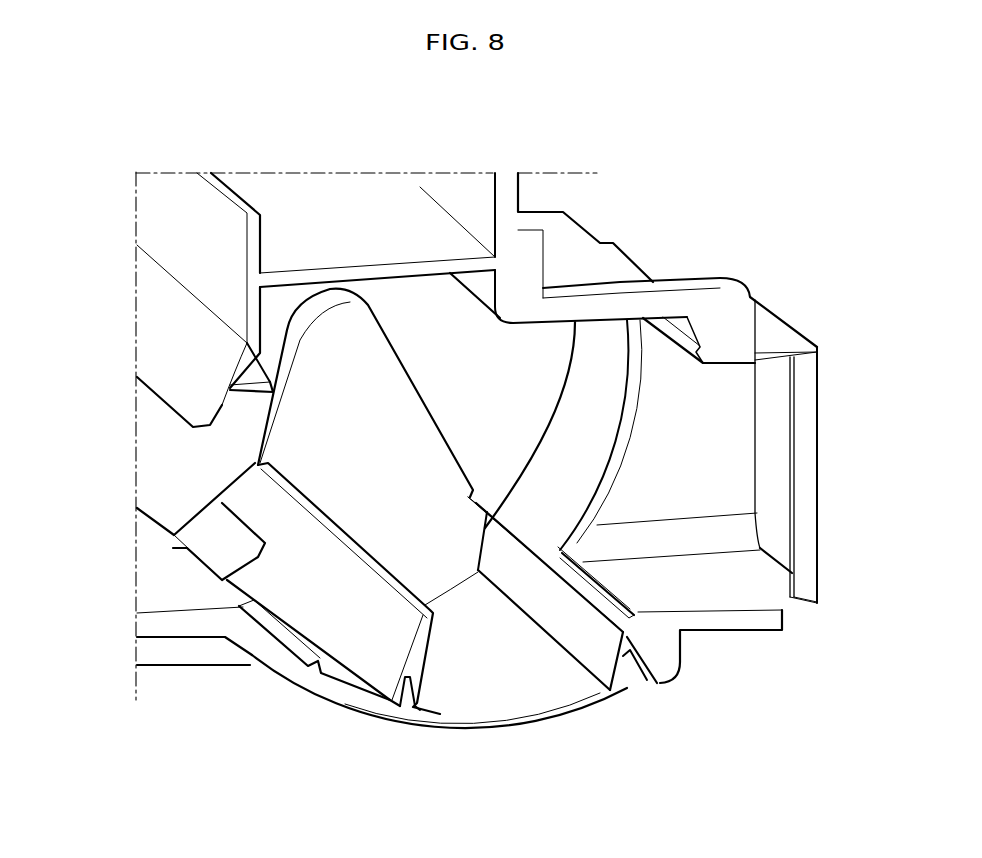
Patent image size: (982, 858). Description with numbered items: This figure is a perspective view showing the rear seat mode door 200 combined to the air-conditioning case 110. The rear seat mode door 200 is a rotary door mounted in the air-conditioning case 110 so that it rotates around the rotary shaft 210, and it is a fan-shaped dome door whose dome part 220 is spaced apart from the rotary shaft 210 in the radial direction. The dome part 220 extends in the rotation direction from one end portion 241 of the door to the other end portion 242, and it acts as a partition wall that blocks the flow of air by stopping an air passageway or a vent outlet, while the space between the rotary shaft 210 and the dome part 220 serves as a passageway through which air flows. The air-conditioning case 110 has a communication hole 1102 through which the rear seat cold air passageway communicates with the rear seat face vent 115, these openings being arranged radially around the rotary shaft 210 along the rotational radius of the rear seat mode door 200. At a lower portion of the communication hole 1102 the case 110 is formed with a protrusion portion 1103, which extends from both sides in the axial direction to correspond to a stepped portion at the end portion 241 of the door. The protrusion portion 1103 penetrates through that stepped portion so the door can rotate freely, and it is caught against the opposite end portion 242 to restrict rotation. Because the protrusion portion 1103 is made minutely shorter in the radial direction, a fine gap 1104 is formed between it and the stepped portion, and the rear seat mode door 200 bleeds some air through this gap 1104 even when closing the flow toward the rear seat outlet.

The air-conditioning case 110 is at (727, 302).
The rear seat face vent 115 is at (772, 458).
The rear seat mode door 200 is at (515, 707).
The rotary shaft 210 is at (340, 330).
The dome part 220 is at (575, 690).
The end portion 241 is at (370, 647).
The end portion 242 is at (612, 652).
The communication hole 1102 is at (188, 476).
The protrusion portion 1103 is at (203, 547).
The gap 1104 is at (230, 518).